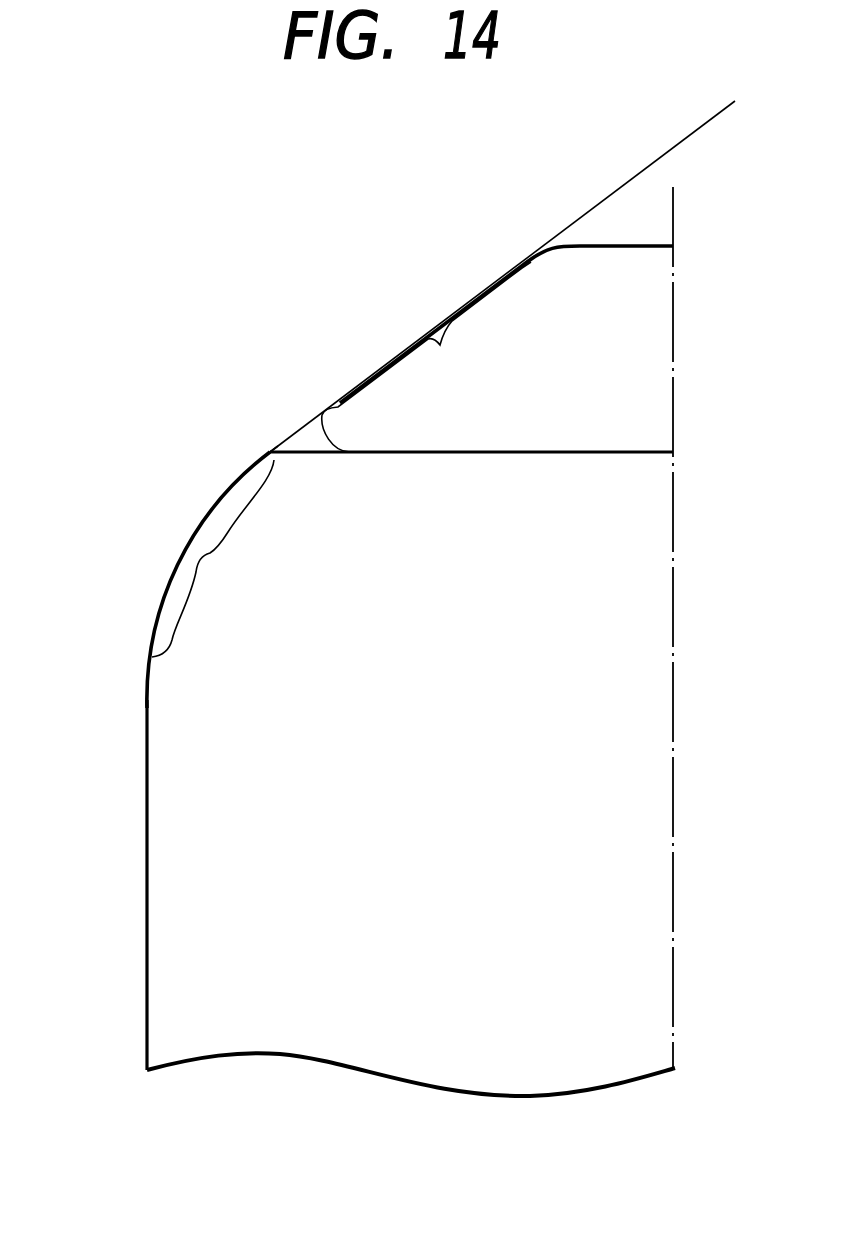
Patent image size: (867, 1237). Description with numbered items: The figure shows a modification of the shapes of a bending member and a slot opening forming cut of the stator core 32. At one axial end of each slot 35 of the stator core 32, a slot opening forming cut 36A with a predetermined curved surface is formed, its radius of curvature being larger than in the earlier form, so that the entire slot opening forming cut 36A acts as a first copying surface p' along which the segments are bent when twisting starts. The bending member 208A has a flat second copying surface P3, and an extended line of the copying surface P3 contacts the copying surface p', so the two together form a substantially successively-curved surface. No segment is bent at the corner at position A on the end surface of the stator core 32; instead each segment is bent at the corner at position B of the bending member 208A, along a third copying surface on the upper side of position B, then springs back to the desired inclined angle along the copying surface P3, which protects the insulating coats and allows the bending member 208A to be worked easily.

The stator core 32 is at (227, 1032).
The slot 35 is at (111, 631).
The slot opening forming cut 36A is at (184, 517).
The bending member 208A is at (650, 258).
The position A is at (270, 450).
The position B is at (529, 260).
The copying surface P3 is at (426, 357).
The copying surface p' is at (213, 558).